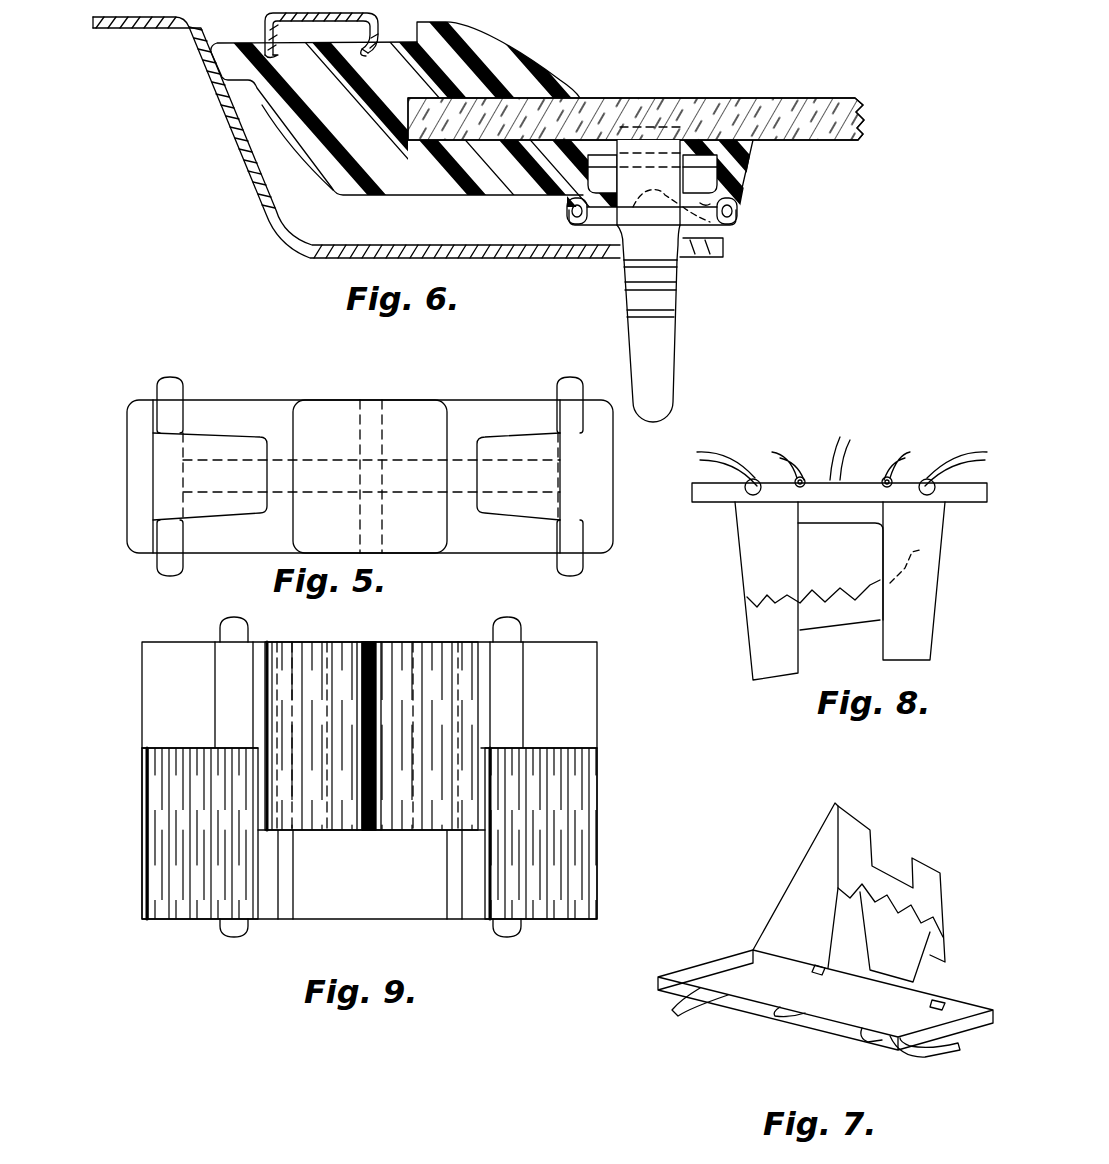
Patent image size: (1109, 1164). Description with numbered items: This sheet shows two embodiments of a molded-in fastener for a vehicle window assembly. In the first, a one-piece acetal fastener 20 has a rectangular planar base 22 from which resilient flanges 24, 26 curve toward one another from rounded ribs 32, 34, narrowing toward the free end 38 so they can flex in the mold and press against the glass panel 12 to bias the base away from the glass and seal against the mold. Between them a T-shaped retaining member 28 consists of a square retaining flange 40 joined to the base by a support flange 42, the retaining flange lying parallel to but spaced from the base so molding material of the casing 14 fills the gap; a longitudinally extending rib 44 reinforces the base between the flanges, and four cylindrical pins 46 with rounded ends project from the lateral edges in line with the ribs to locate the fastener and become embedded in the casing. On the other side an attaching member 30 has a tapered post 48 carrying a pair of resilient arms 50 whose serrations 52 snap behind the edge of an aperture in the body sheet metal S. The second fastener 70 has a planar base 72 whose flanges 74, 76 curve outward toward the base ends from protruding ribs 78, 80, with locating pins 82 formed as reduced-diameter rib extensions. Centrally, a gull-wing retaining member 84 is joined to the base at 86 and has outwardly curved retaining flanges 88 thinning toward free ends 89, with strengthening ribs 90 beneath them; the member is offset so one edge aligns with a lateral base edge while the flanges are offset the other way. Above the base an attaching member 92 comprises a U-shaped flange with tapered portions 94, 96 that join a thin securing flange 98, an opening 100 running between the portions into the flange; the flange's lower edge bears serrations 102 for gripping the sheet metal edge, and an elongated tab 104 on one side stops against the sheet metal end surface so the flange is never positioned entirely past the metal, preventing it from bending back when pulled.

In FIG. 6, the glass panel 12 is at (807, 100).
In FIG. 6, the molded casing 14 is at (473, 38).
In FIG. 6, the body sheet metal S is at (257, 173).
In FIG. 6, the fastener 20 is at (686, 237).
In FIG. 5, the fastener 20 is at (152, 356).
In FIG. 6, the base 22 is at (693, 255).
In FIG. 5, the base 22 is at (492, 410).
In FIG. 5, the resilient flexible flange 24 is at (523, 507).
In FIG. 6, the resilient flexible flange 26 is at (657, 148).
In FIG. 5, the resilient flexible flange 26 is at (235, 500).
In FIG. 6, the T-shaped retaining member 28 is at (710, 177).
In FIG. 5, the T-shaped retaining member 28 is at (417, 395).
In FIG. 6, the attaching member 30 is at (682, 236).
In FIG. 5, the rounded rib 32 is at (575, 530).
In FIG. 6, the rounded rib 34 is at (707, 202).
In FIG. 5, the rounded rib 34 is at (165, 533).
In FIG. 5, the free end 38 is at (270, 447).
In FIG. 6, the retaining flange 40 is at (602, 160).
In FIG. 5, the retaining flange 40 is at (337, 437).
In FIG. 6, the support flange 42 is at (603, 173).
In FIG. 5, the support flange 42 is at (408, 548).
In FIG. 6, the longitudinally extending rib 44 is at (717, 233).
In FIG. 5, the longitudinally extending rib 44 is at (460, 475).
In FIG. 6, the pins 46 is at (733, 210).
In FIG. 5, the pins 46 is at (168, 385).
In FIG. 6, the post 48 is at (638, 240).
In FIG. 6, the attaching arms 50 is at (660, 402).
In FIG. 6, the serrations 52 is at (677, 290).
In FIG. 8, the fastener 70 is at (837, 562).
In FIG. 9, the fastener 70 is at (375, 798).
In FIG. 7, the fastener 70 is at (823, 932).
In FIG. 8, the base 72 is at (705, 490).
In FIG. 9, the base 72 is at (190, 714).
In FIG. 7, the base 72 is at (710, 968).
In FIG. 8, the resilient flexible flange 74 is at (997, 420).
In FIG. 9, the resilient flexible flange 74 is at (569, 898).
In FIG. 7, the resilient flexible flange 74 is at (922, 1050).
In FIG. 8, the resilient flexible flange 76 is at (700, 465).
In FIG. 9, the resilient flexible flange 76 is at (202, 851).
In FIG. 7, the resilient flexible flange 76 is at (672, 1017).
In FIG. 9, the protruding rib 78 is at (512, 703).
In FIG. 7, the protruding rib 78 is at (957, 1020).
In FIG. 9, the protruding rib 80 is at (218, 669).
In FIG. 7, the protruding rib 80 is at (767, 990).
In FIG. 8, the locating and positioning pins 82 is at (935, 487).
In FIG. 9, the locating and positioning pins 82 is at (246, 627).
In FIG. 7, the locating and positioning pins 82 is at (817, 968).
In FIG. 8, the gull-wing shaped retaining member 84 is at (842, 446).
In FIG. 9, the gull-wing shaped retaining member 84 is at (385, 655).
In FIG. 7, the gull-wing shaped retaining member 84 is at (841, 1016).
In FIG. 8, the joint of retaining member to base 86 is at (845, 460).
In FIG. 8, the retaining flanges 88 is at (800, 450).
In FIG. 9, the retaining flanges 88 is at (320, 741).
In FIG. 7, the retaining flanges 88 is at (800, 1008).
In FIG. 8, the free ends 89 is at (757, 447).
In FIG. 9, the free ends 89 is at (262, 709).
In FIG. 8, the strengthening ribs 90 is at (800, 485).
In FIG. 9, the strengthening ribs 90 is at (282, 915).
In FIG. 8, the attaching member 92 is at (880, 617).
In FIG. 8, the flange portion 94 is at (834, 591).
In FIG. 7, the flange portion 94 is at (917, 961).
In FIG. 8, the flange portion 96 is at (783, 654).
In FIG. 7, the flange portion 96 is at (833, 934).
In FIG. 8, the securing flange 98 is at (838, 630).
In FIG. 7, the securing flange 98 is at (877, 788).
In FIG. 8, the opening 100 is at (800, 645).
In FIG. 7, the opening 100 is at (902, 862).
In FIG. 7, the serrations 102 is at (907, 920).
In FIG. 7, the tab 104 is at (940, 945).